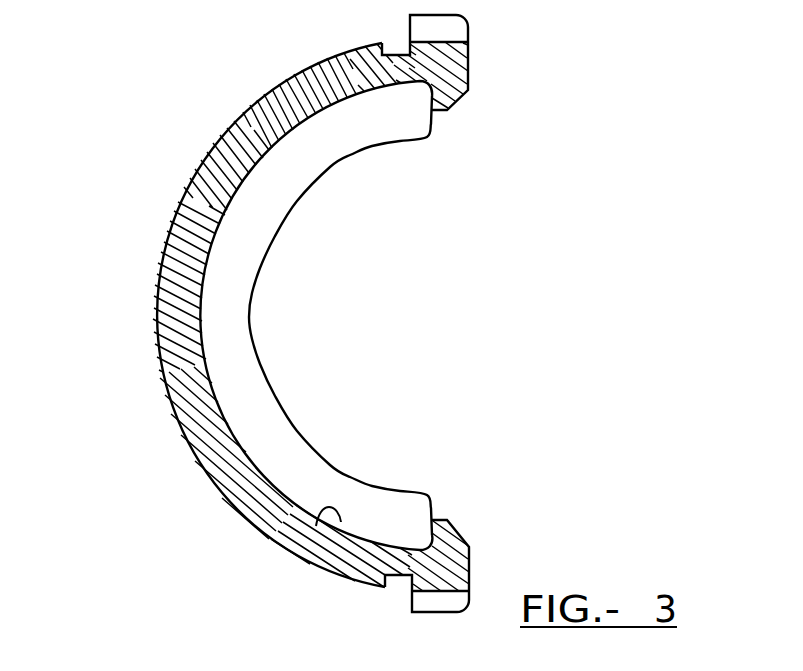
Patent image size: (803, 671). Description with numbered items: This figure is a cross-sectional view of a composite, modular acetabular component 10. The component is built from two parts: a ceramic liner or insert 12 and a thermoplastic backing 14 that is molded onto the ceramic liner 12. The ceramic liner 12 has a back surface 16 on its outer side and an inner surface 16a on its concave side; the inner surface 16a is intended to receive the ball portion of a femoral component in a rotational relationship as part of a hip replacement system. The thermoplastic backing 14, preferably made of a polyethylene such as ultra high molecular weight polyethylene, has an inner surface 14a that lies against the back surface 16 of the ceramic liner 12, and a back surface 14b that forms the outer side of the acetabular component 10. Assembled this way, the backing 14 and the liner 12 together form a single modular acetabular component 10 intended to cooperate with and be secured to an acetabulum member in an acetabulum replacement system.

The modular acetabular component 10 is at (255, 316).
The ceramic liner 12 is at (300, 330).
The thermoplastic backing 14 is at (255, 321).
The inner surface 14a is at (328, 508).
The back surface 14b is at (228, 506).
The back surface 16 is at (253, 315).
The inner surface 16a is at (318, 453).